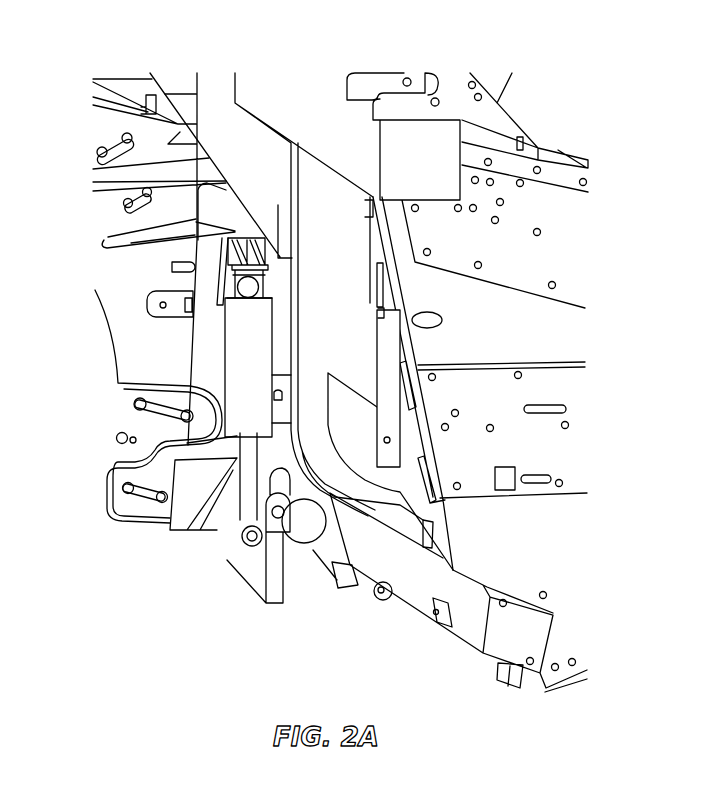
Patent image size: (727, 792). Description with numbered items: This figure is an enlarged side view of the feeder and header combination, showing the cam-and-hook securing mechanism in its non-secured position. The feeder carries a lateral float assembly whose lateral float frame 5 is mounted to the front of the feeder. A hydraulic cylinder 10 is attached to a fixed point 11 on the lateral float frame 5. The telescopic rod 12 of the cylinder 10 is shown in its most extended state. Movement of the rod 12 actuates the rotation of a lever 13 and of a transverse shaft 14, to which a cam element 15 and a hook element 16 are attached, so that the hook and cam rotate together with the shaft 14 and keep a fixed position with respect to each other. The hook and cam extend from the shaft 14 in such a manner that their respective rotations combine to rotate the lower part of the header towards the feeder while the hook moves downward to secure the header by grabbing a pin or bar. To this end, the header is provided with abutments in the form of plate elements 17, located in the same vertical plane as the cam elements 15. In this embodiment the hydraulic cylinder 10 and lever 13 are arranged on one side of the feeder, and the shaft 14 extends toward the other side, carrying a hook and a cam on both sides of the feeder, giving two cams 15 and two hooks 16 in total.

The lateral float frame 5 is at (127, 325).
The hydraulic cylinder 10 is at (237, 373).
The fixed point 11 is at (237, 288).
The telescopic rod 12 is at (180, 535).
The lever 13 is at (240, 540).
The transverse shaft 14 is at (278, 520).
The cam element 15 is at (298, 543).
The hook element 16 is at (240, 518).
The plate element 17 is at (318, 540).